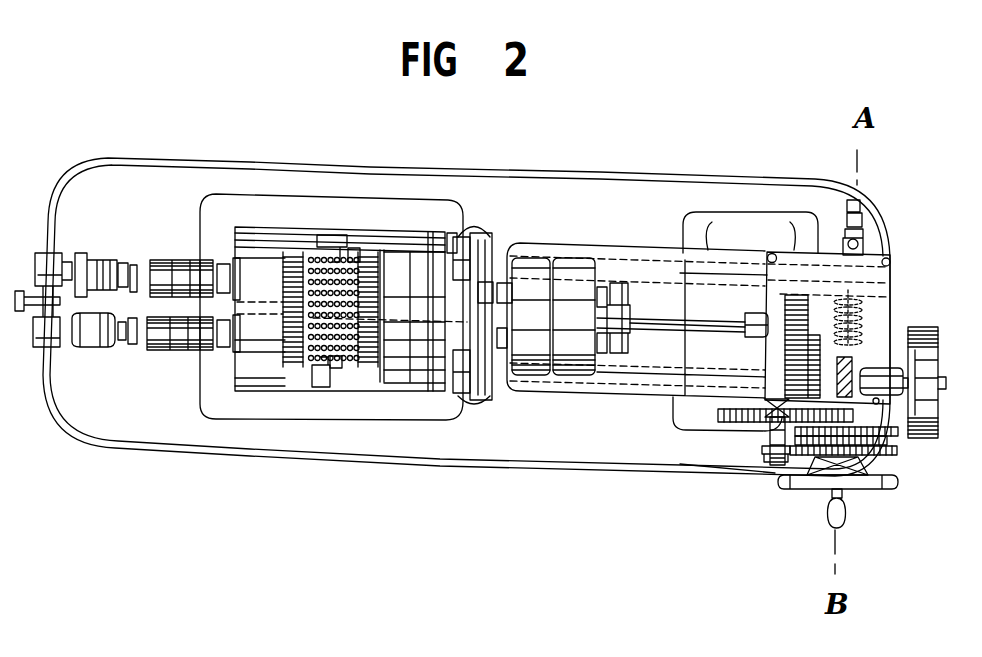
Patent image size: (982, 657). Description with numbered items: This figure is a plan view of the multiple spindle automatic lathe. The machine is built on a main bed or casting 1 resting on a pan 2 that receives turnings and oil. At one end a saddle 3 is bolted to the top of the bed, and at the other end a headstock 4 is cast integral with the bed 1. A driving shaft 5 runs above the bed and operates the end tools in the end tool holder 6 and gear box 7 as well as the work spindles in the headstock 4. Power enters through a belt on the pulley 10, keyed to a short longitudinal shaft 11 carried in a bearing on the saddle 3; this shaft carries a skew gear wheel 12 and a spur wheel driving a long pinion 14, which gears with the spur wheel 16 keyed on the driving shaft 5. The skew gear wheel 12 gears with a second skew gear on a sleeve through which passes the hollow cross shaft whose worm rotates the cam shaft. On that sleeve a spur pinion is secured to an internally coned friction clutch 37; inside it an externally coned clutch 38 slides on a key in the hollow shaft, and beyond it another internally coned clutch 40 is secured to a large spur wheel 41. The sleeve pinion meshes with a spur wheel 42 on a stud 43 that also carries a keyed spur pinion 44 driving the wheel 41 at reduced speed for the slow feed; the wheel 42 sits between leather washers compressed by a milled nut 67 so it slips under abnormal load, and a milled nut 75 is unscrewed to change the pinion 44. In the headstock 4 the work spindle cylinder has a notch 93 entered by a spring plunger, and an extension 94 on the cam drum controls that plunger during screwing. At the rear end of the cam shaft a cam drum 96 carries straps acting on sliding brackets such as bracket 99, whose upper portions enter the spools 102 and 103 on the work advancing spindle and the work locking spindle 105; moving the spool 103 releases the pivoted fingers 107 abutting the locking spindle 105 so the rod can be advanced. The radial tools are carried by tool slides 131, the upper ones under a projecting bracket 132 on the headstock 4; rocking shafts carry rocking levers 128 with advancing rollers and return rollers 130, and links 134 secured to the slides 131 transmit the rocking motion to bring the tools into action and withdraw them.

The main bed 1 is at (436, 225).
The pan 2 is at (250, 170).
The saddle 3 is at (880, 300).
The headstock 4 is at (351, 309).
The driving shaft 5 is at (722, 326).
The end tool holder 6 is at (541, 266).
The gear box 7 is at (578, 268).
The pulley 10 is at (936, 338).
The short longitudinal shaft 11 is at (946, 382).
The skew gear wheel 12 is at (855, 360).
The long pinion 14 is at (848, 354).
The spur wheel 16 is at (820, 366).
The internally coned friction clutch 37 is at (853, 428).
The externally coned clutch 38 is at (886, 439).
The internally coned clutch 40 is at (880, 448).
The large spur wheel 41 is at (880, 456).
The spur wheel 42 is at (752, 423).
The stud 43 is at (692, 408).
The spur pinion 44 is at (762, 450).
The milled nut 67 is at (765, 442).
The milled nut 75 is at (770, 459).
The notch 93 is at (288, 256).
The extension 94 is at (290, 364).
The cam drum 96 is at (133, 344).
The bracket 99 is at (100, 338).
The spool 102 is at (95, 277).
The spool 103 is at (215, 348).
The work locking spindle 105 is at (235, 266).
The pivoted fingers 107 is at (182, 266).
The rocking lever 128 is at (353, 252).
The rollers 130 is at (334, 234).
The tool slides 131 is at (493, 234).
The projecting bracket 132 is at (414, 311).
The links 134 is at (447, 229).